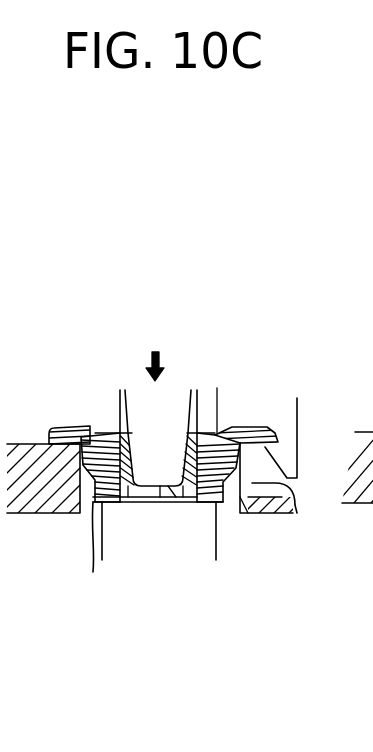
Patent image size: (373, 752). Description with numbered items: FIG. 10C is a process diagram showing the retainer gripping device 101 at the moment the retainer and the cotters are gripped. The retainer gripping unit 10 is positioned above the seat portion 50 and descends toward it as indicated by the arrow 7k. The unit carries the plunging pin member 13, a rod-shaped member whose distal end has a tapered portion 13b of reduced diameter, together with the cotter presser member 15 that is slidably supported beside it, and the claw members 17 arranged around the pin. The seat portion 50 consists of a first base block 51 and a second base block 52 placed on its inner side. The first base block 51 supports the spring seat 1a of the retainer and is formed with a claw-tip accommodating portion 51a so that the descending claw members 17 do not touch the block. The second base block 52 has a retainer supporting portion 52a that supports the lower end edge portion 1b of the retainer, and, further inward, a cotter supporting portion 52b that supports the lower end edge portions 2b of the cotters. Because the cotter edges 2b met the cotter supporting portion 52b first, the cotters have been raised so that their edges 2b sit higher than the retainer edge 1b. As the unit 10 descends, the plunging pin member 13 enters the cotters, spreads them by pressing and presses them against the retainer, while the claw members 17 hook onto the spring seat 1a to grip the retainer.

The vehicle-mounted camera unit 101 is at (142, 612).
The retainer gripping unit 10 is at (149, 295).
The plunging pin member 13 is at (195, 400).
The tapered portion 13b is at (212, 415).
The arrow 7k is at (147, 359).
The cotter presser member 15 is at (101, 433).
The spring seat 1a is at (65, 427).
The claw member 17 is at (278, 427).
The lower end edge portion 1b is at (118, 503).
The lower end edge portions 2b is at (183, 503).
The seat portion 50 is at (290, 573).
The first base block 51 is at (25, 444).
The claw-tip accommodating portion 51a is at (297, 513).
The second base block 52 is at (217, 540).
The retainer supporting portion 52a is at (83, 554).
The cotter supporting portion 52b is at (167, 503).